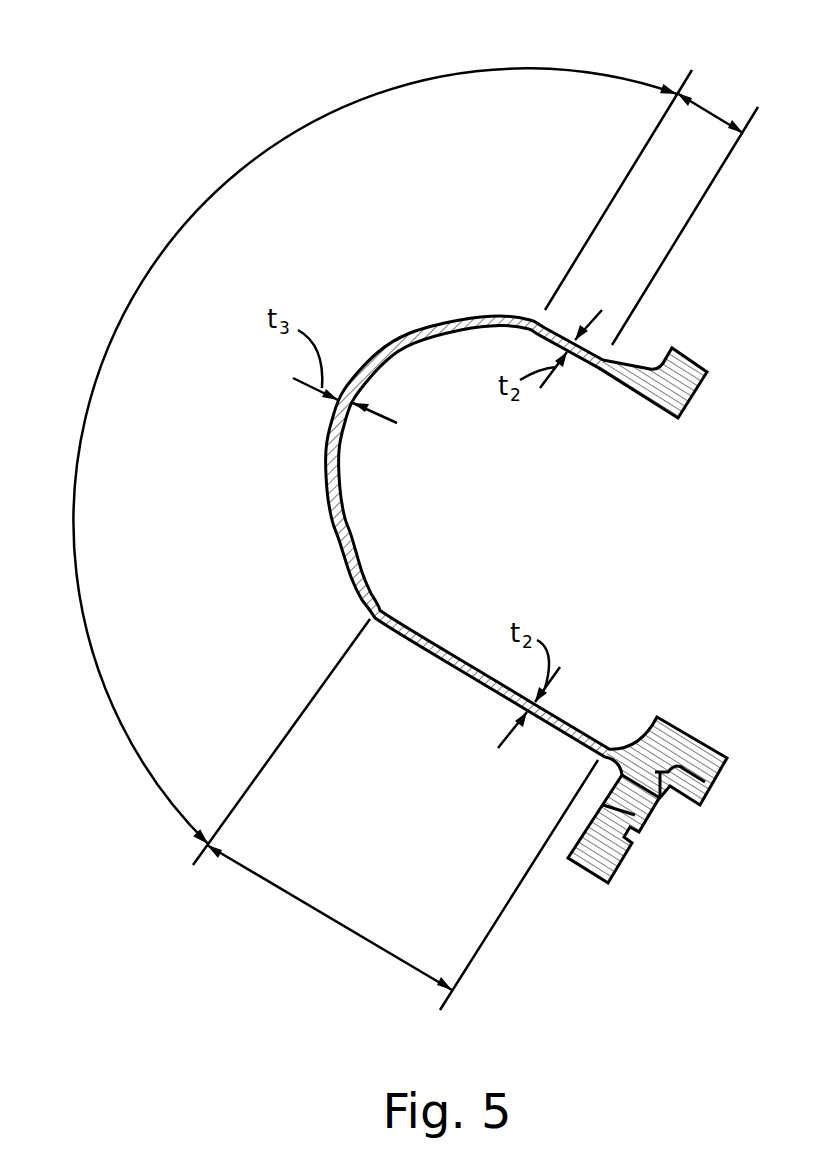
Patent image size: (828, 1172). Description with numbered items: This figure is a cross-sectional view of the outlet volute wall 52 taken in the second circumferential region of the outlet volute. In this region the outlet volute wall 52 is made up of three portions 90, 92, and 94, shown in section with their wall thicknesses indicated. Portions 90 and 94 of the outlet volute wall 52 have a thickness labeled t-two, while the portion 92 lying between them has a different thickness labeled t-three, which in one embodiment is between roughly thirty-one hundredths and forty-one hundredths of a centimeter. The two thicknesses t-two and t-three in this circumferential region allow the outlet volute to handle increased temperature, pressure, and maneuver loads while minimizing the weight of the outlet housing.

The outlet volute wall 52 is at (360, 603).
The portion 90 is at (710, 110).
The portion 92 is at (195, 212).
The portion 94 is at (327, 918).